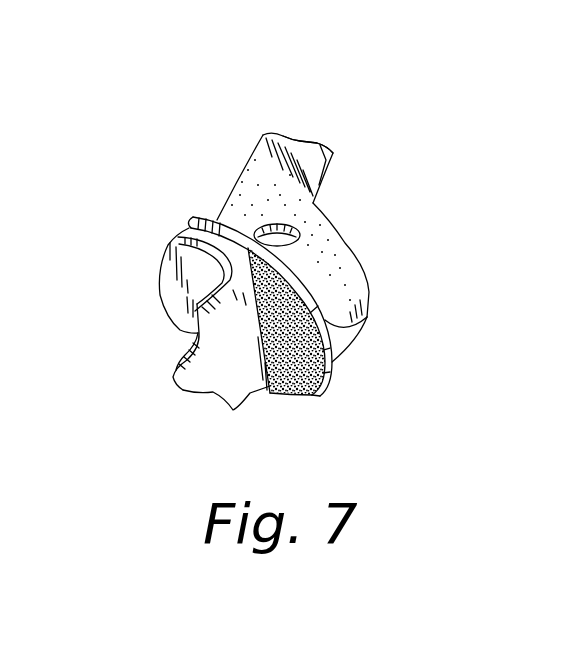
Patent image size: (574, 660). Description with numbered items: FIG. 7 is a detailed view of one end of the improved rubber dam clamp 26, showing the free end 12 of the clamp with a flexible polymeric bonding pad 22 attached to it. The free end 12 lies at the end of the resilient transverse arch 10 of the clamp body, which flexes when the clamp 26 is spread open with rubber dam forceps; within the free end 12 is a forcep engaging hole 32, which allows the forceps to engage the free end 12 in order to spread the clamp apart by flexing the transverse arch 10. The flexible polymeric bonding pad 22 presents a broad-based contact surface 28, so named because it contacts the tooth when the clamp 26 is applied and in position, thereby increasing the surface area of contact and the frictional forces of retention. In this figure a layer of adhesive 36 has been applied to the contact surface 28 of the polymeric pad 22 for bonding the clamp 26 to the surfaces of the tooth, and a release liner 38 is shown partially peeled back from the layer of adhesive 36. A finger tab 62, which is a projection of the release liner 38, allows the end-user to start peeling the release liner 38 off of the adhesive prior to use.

The resilient transverse arch 10 is at (264, 133).
The free end 12 is at (335, 252).
The flexible polymeric bonding pad 22 is at (321, 306).
The rubber dam clamp 26 is at (338, 127).
The contact surface 28 is at (303, 377).
The forcep engaging hole 32 is at (300, 227).
The layer of adhesive 36 is at (332, 362).
The release liner 38 is at (238, 406).
The finger tab 62 is at (195, 373).